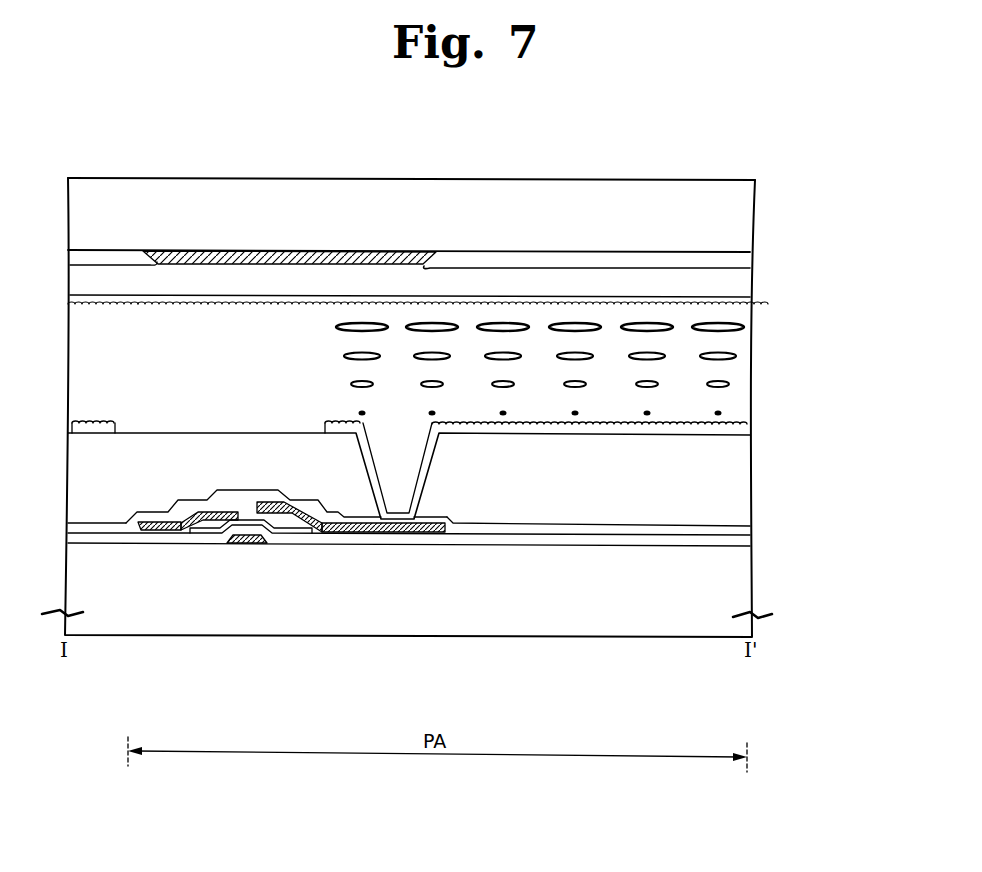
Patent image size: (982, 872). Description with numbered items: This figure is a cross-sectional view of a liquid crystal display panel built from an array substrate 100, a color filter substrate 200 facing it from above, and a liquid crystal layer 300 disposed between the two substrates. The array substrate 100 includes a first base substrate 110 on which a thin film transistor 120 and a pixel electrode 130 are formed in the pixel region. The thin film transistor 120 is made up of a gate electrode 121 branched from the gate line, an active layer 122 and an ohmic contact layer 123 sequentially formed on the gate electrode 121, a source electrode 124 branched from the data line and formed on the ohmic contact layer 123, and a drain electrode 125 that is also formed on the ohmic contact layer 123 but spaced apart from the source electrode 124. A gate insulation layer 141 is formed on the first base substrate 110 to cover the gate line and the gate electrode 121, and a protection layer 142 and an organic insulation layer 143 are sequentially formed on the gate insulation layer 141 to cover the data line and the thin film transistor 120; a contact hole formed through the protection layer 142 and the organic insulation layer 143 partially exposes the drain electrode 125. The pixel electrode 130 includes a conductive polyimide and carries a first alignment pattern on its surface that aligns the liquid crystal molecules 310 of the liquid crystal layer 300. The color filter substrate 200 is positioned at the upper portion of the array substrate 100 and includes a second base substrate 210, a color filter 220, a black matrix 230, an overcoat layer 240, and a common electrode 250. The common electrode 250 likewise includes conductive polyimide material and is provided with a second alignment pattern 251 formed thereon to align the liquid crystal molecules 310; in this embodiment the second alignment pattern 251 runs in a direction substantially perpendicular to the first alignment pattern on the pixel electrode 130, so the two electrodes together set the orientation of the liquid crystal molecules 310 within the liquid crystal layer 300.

The array substrate 100 is at (838, 417).
The first base substrate 110 is at (742, 569).
The thin film transistor 120 is at (366, 672).
The gate electrode 121 is at (238, 544).
The active layer 122 is at (193, 534).
The ohmic contact layer 123 is at (290, 533).
The source electrode 124 is at (150, 531).
The drain electrode 125 is at (345, 533).
The pixel electrode 130 is at (748, 432).
The gate insulation layer 141 is at (745, 543).
The protection layer 142 is at (745, 526).
The organic insulation layer 143 is at (742, 482).
The color filter substrate 200 is at (838, 203).
The second base substrate 210 is at (742, 216).
The color filter 220 is at (742, 257).
The black matrix 230 is at (306, 250).
The overcoat layer 240 is at (742, 277).
The common electrode 250 is at (742, 302).
The second alignment pattern 251 is at (225, 307).
The liquid crystal layer 300 is at (745, 346).
The liquid crystal molecules 310 is at (732, 384).